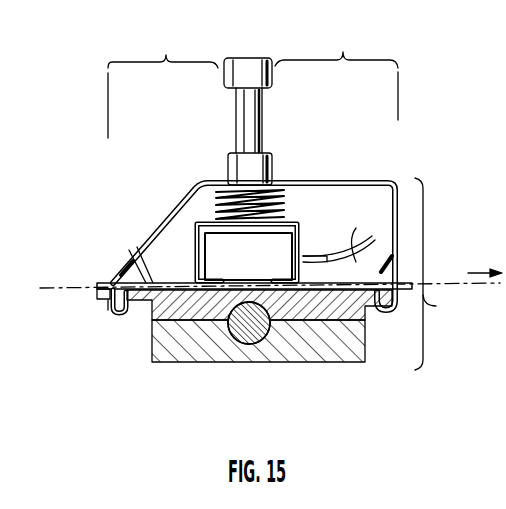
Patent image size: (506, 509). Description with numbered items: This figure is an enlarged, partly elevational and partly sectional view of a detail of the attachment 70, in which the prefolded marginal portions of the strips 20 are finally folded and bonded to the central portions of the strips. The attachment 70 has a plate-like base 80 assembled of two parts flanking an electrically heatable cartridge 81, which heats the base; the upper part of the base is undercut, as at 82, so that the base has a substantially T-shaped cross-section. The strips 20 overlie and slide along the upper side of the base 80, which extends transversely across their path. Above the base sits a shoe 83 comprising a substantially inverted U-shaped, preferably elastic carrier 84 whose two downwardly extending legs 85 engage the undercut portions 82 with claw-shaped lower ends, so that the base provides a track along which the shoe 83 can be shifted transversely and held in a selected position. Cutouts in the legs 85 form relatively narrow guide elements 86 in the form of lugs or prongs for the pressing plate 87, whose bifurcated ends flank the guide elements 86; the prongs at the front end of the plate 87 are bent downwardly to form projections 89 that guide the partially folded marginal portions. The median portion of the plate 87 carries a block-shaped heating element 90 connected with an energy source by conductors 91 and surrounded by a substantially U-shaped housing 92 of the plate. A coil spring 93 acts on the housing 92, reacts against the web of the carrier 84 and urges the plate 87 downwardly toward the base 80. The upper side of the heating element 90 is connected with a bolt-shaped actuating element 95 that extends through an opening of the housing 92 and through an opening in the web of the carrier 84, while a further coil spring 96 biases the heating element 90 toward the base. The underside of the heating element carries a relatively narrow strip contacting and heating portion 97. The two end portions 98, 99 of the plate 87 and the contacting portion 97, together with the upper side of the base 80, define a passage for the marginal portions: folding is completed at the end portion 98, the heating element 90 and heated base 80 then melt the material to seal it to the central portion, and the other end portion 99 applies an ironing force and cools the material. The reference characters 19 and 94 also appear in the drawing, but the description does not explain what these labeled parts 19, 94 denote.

The direction arrow 19 is at (481, 277).
The strip 20 is at (68, 285).
The attachment 70 is at (383, 158).
The base 80 is at (423, 342).
The electrically heatable cartridge 81 is at (252, 362).
The undercut portion 82 is at (136, 318).
The shoe 83 is at (423, 223).
The carrier 84 is at (171, 213).
The leg 85 is at (118, 314).
The guide element 86 is at (118, 268).
The plate 87 is at (139, 249).
The projection 89 is at (100, 299).
The heating element 90 is at (215, 260).
The conductor 91 is at (364, 260).
The housing 92 is at (310, 243).
The coil spring 93 is at (287, 185).
The rolled edge 94 is at (107, 306).
The actuating element 95 is at (242, 118).
The further coil spring 96 is at (266, 236).
The contacting portion 97 is at (232, 347).
The end portion 98 is at (166, 55).
The end portion 99 is at (343, 52).